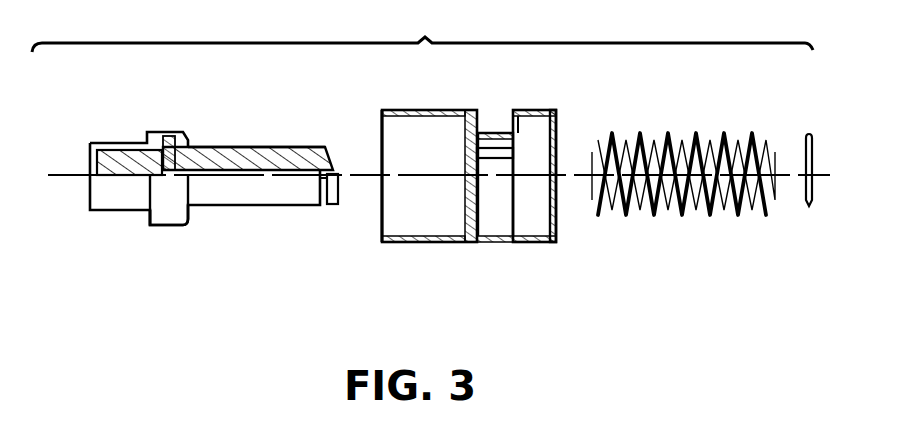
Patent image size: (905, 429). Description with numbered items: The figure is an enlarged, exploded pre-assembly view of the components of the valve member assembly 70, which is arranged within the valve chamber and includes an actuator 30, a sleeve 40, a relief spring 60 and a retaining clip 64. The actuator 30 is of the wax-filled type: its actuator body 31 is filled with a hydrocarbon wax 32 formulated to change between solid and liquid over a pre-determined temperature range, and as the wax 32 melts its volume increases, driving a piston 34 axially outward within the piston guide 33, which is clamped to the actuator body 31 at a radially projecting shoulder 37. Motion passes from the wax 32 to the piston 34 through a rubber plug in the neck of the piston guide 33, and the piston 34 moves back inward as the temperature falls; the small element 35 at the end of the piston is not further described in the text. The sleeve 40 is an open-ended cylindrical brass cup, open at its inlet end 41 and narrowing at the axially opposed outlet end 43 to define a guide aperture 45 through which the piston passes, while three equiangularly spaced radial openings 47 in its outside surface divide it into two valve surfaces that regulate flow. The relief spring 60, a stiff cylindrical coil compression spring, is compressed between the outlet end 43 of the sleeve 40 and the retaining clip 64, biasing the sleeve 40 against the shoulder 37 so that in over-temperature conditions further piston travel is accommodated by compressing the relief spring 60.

The valve member assembly 70 is at (422, 32).
The actuator 30 is at (163, 226).
The actuator body 31 is at (110, 143).
The hydrocarbon wax 32 is at (97, 160).
The piston guide 33 is at (230, 146).
The piston 34 is at (301, 146).
The retaining clip 35 is at (327, 205).
The shoulder 37 is at (190, 216).
The sleeve 40 is at (455, 242).
The inlet end 41 is at (380, 243).
The outlet end 43 is at (572, 243).
The guide aperture 45 is at (558, 155).
The radial openings 47 is at (492, 122).
The relief spring 60 is at (652, 217).
The retaining clip 64 is at (809, 206).